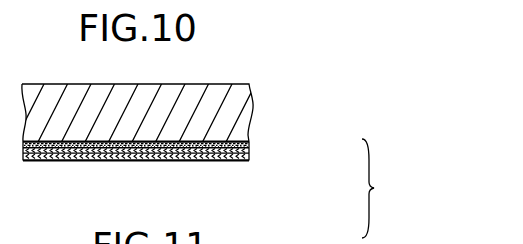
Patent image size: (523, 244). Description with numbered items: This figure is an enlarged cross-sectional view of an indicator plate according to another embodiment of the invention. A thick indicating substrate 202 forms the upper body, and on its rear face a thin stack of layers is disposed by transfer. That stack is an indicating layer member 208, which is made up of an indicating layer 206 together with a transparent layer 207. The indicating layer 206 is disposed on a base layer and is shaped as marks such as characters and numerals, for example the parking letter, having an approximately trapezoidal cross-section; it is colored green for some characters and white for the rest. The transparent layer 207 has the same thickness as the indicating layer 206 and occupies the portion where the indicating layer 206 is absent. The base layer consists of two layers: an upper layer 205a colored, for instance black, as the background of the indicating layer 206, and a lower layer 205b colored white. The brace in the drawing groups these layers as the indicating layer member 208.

The indicating substrate 202 is at (248, 103).
The upper layer 205a is at (250, 146).
The lower layer 205b is at (250, 156).
The indicating layer 206 is at (222, 161).
The transparent layer 207 is at (187, 161).
The indicating layer member 208 is at (388, 188).